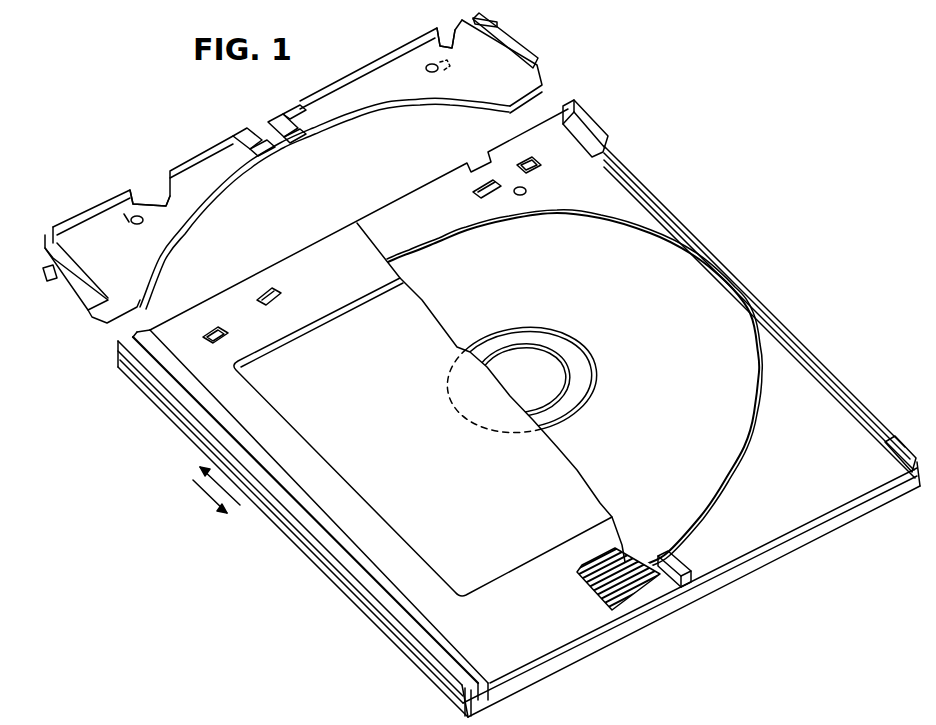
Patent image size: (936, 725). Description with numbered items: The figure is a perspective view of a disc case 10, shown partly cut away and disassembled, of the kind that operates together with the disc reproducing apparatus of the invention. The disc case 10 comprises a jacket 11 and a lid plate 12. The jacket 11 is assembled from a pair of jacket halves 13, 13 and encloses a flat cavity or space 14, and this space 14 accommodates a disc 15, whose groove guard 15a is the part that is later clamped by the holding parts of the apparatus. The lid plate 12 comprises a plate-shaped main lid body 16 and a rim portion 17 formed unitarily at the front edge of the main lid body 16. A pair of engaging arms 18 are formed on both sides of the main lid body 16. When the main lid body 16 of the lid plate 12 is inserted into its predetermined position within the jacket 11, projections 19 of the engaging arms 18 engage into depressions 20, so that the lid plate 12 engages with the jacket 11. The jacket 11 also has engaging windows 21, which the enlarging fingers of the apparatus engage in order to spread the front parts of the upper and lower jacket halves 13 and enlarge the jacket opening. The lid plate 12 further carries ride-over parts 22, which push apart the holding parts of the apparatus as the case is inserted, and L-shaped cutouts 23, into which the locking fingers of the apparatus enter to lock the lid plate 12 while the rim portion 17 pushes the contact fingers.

The disc case 10 is at (615, 113).
The jacket 11 is at (322, 578).
The lid plate 12 is at (183, 158).
The jacket halves 13 is at (820, 523).
The flat cavity or space 14 is at (818, 380).
The disc 15 is at (745, 397).
The groove guard 15a is at (745, 456).
The main lid body 16 is at (387, 102).
The rim portion 17 is at (311, 96).
The engaging arms 18 is at (68, 298).
The projections 19 is at (47, 278).
The depressions 20 is at (584, 136).
The engaging windows 21 is at (262, 290).
The ride-over parts 22 is at (248, 133).
The L-shaped cutouts 23 is at (143, 197).